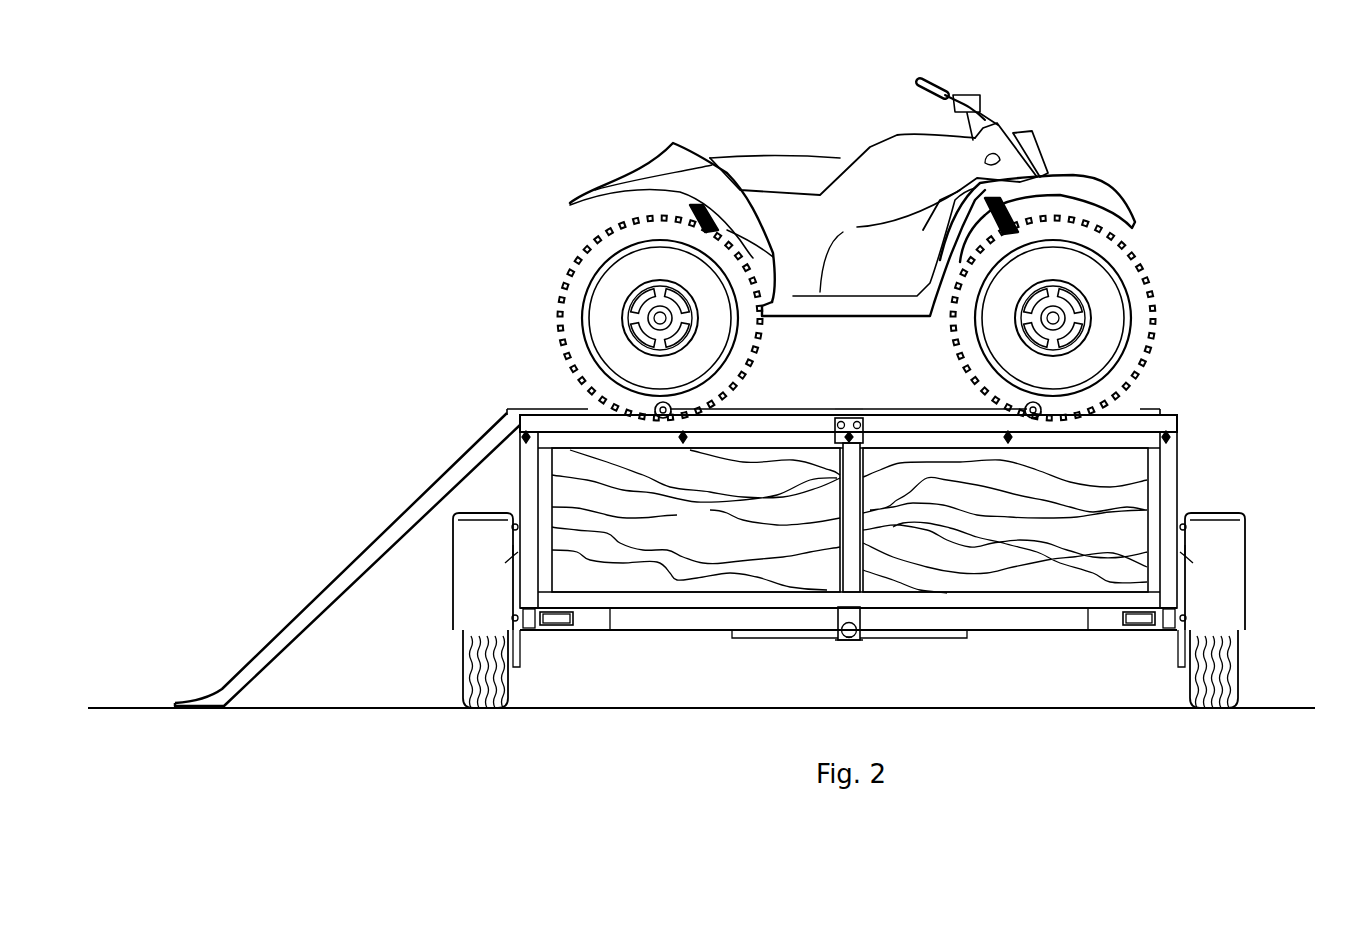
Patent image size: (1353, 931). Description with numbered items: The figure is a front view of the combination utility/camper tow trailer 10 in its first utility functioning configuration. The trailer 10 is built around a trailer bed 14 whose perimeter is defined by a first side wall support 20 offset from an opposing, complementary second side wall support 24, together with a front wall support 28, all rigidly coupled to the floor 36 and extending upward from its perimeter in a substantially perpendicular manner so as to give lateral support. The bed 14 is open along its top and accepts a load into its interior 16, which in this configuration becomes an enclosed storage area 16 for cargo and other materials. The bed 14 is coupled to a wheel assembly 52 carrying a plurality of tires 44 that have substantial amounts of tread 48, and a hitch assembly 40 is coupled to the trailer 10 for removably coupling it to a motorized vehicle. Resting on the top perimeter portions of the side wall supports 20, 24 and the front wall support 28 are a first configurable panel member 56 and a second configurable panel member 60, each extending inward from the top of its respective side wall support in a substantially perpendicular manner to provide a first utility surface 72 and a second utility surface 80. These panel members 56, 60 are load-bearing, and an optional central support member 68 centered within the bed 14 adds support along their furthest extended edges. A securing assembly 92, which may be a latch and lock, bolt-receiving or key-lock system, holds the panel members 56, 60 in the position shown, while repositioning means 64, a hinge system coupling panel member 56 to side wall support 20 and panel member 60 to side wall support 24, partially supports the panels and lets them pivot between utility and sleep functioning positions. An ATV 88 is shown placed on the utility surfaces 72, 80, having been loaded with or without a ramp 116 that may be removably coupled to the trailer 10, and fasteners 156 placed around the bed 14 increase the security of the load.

The utility/camper trailer 10 is at (754, 500).
The trailer bed 14 is at (833, 507).
The interior 16 is at (674, 517).
The first side wall support 20 is at (528, 480).
The second side wall support 24 is at (1170, 480).
The front wall support 28 is at (683, 575).
The floor 36 is at (632, 626).
The hitch assembly 40 is at (863, 640).
The tires 44 is at (467, 655).
The tread 48 is at (1234, 678).
The wheel assembly 52 is at (452, 594).
The first configurable panel member 56 is at (556, 420).
The second configurable panel member 60 is at (1150, 412).
The repositioning means 64 is at (522, 432).
The central support member 68 is at (860, 523).
The first utility surface 72 is at (818, 415).
The second utility surface 80 is at (883, 407).
The ATV 88 is at (1060, 140).
The securing assembly 92 is at (840, 407).
The ramp 116 is at (330, 593).
The fastener 156 is at (517, 656).